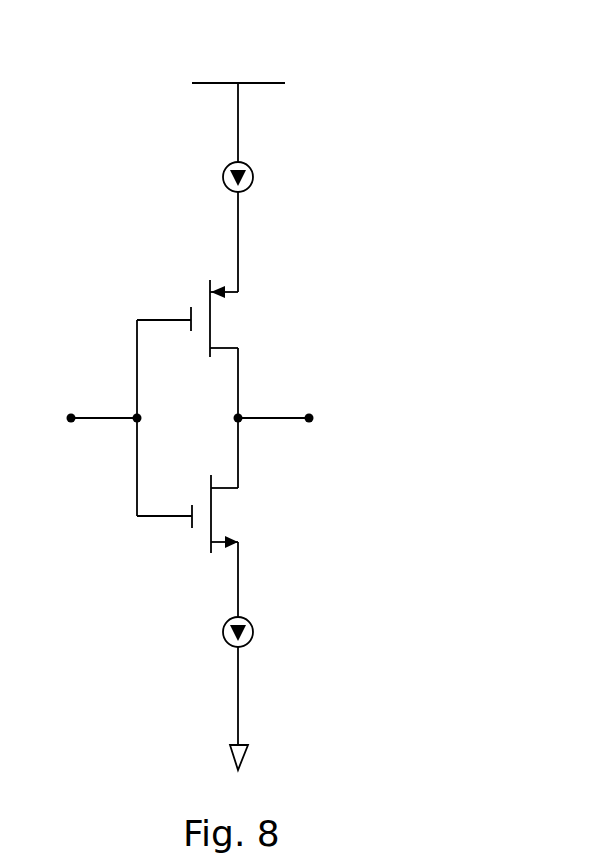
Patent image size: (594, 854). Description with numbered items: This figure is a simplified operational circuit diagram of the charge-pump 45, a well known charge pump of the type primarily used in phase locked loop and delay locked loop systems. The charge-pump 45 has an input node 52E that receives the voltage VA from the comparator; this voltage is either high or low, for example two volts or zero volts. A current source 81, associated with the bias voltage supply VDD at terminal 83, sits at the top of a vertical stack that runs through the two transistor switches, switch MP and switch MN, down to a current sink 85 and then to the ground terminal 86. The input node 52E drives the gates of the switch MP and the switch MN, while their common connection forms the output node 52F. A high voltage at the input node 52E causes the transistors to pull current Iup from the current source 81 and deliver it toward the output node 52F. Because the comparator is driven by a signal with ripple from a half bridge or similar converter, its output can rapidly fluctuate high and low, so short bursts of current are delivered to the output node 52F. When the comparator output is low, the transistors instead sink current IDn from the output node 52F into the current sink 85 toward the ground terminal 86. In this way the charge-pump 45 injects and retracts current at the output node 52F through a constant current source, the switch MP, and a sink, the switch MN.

The charge-pump 45 is at (467, 128).
The terminal 83 is at (252, 83).
The current source 81 is at (252, 172).
The switch MP is at (250, 337).
The switch MN is at (233, 513).
The input node 52E is at (71, 423).
The output node 52F is at (309, 423).
The current sink 85 is at (254, 632).
The ground terminal 86 is at (233, 745).